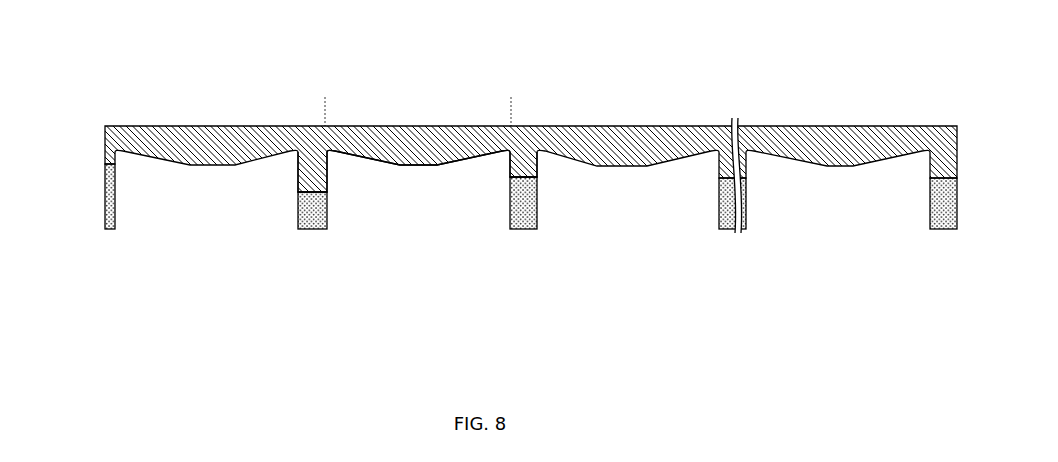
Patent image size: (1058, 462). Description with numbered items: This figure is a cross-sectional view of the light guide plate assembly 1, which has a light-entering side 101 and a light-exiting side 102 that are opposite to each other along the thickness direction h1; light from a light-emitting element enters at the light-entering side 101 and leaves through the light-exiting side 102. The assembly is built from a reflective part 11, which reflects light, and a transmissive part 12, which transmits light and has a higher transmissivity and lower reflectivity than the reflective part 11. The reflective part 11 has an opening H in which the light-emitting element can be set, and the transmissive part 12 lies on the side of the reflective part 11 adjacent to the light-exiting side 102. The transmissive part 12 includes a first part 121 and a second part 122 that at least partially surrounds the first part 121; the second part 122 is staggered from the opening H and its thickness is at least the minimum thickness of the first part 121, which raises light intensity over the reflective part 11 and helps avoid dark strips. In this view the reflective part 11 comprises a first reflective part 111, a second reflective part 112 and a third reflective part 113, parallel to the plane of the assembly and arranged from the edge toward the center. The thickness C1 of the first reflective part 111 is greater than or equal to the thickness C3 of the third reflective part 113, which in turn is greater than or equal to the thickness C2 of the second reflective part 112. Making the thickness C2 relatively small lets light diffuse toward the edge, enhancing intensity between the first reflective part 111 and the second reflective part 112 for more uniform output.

The light guide plate assembly 1 is at (528, 195).
The light-exiting side 102 is at (192, 100).
The light-entering side 101 is at (210, 262).
The transmissive part 12 is at (416, 125).
The first part 121 is at (420, 147).
The second part 122 is at (305, 149).
The reflective part 11 is at (520, 226).
The first reflective part 111 is at (110, 231).
The second reflective part 112 is at (308, 230).
The third reflective part 113 is at (521, 230).
The opening H is at (404, 216).
The thickness of the first reflective part C1 is at (105, 229).
The thickness of the second reflective part C2 is at (298, 229).
The thickness of the third reflective part C3 is at (510, 230).
The thickness direction h1 is at (126, 368).